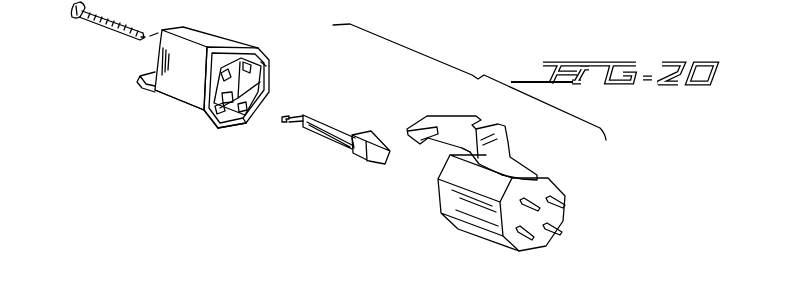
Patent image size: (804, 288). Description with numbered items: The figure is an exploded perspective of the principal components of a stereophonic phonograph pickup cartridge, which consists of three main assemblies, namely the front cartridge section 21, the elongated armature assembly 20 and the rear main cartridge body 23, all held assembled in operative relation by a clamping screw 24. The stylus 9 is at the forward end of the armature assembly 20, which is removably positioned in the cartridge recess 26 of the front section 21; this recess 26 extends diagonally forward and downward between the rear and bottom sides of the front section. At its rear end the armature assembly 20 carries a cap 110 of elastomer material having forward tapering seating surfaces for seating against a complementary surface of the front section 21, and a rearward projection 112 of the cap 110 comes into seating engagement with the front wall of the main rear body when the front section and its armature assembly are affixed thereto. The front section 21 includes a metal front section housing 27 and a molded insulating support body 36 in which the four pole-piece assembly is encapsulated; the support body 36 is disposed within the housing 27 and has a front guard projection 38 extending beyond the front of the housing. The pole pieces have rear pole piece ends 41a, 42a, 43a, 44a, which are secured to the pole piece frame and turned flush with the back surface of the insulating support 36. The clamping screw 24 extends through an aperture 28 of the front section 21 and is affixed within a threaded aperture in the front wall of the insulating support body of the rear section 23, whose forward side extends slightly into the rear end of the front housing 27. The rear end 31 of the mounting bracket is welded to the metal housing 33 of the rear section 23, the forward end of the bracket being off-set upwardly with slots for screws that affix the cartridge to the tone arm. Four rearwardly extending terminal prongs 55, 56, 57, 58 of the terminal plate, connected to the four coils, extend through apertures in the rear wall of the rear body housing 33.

The clamping screw 24 is at (103, 29).
The front cartridge section 21 is at (223, 21).
The front section housing 27 is at (240, 48).
The aperture 28 is at (248, 55).
The insulating support body 36 is at (249, 88).
The rear pole piece end 42a is at (263, 64).
The front guard projection 38 is at (152, 81).
The rear pole piece end 44a is at (210, 86).
The rear pole piece end 41a is at (217, 103).
The cartridge recess 26 is at (245, 116).
The rear pole piece end 43a is at (243, 129).
The armature assembly 20 is at (337, 116).
The stylus 9 is at (287, 125).
The cap 110 is at (350, 150).
The rearward projection 112 is at (380, 158).
The rear main cartridge body 23 is at (528, 137).
The metal housing 33 is at (490, 240).
The rear end of mounting bracket 31 is at (513, 168).
The terminal prong 58 is at (537, 204).
The terminal prong 56 is at (562, 203).
The terminal prong 57 is at (560, 230).
The terminal prong 55 is at (527, 239).